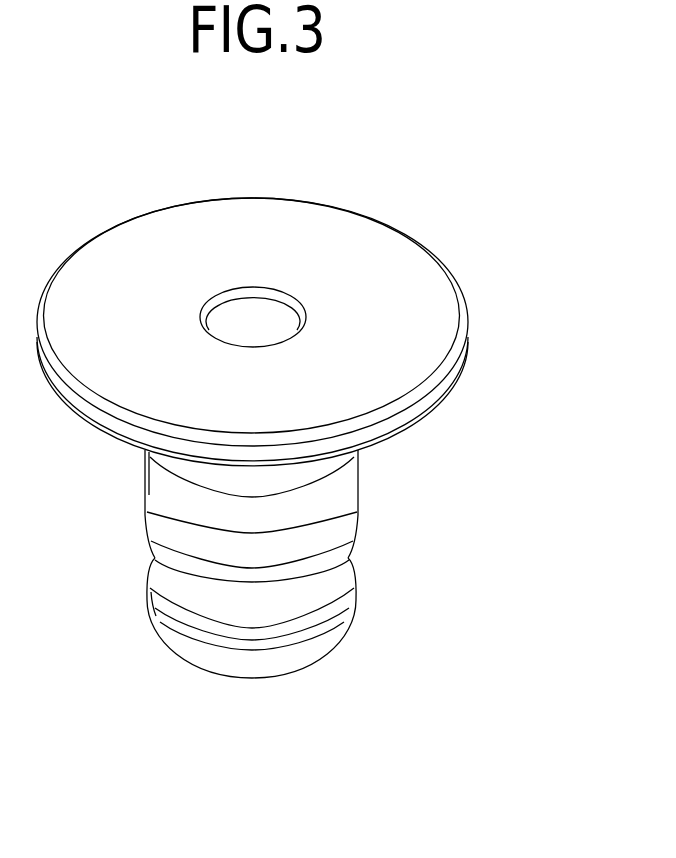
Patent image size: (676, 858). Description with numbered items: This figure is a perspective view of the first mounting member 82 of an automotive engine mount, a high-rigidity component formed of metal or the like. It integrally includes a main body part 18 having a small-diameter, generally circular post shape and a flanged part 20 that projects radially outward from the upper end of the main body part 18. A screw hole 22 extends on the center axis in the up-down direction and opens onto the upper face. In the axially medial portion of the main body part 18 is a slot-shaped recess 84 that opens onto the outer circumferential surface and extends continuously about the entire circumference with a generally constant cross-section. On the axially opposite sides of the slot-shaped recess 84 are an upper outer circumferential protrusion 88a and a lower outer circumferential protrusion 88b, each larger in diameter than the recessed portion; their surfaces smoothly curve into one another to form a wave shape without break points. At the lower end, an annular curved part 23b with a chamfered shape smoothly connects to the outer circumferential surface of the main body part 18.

The first mounting member 82 is at (488, 224).
The flanged part 20 is at (142, 248).
The screw hole 22 is at (283, 312).
The main body part 18 is at (182, 502).
The upper outer circumferential protrusion 88a is at (348, 518).
The slot-shaped recess 84 is at (353, 553).
The lower outer circumferential protrusion 88b is at (350, 595).
The annular curved part 23b is at (298, 657).